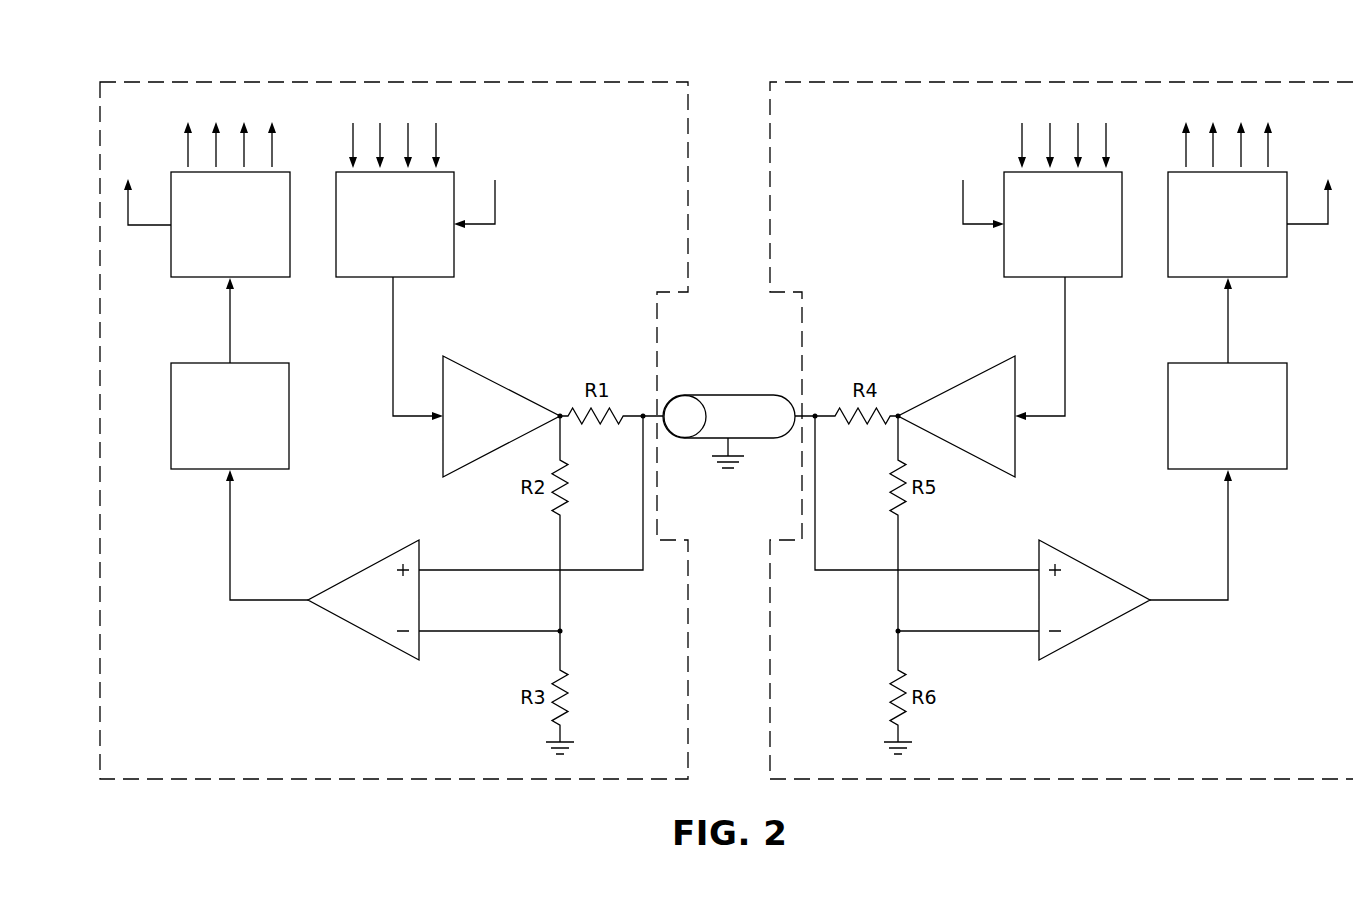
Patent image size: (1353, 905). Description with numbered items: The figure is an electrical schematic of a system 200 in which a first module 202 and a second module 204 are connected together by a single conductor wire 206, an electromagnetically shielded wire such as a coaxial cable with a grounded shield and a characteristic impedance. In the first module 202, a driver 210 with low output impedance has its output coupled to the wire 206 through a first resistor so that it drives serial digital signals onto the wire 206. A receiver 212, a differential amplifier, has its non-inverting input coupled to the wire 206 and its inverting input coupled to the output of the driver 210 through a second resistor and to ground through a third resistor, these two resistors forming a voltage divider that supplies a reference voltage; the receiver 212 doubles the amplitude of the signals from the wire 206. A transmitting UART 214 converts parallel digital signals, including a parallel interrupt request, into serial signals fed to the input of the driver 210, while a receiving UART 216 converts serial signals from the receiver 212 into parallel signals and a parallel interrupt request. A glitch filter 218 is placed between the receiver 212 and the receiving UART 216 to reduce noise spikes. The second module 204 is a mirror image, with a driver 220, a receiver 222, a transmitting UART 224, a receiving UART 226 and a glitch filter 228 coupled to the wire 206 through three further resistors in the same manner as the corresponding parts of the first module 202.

The system 200 is at (730, 100).
The first module 202 is at (396, 82).
The second module 204 is at (1062, 82).
The single conductor wire 206 is at (731, 393).
The driver 210 is at (502, 384).
The receiver 212 is at (360, 568).
The transmitting UART 214 is at (367, 279).
The receiving UART 216 is at (212, 279).
The glitch filter 218 is at (171, 413).
The driver 220 is at (957, 384).
The receiver 222 is at (1098, 568).
The transmitting UART 224 is at (1100, 279).
The receiving UART 226 is at (1262, 279).
The glitch filter 228 is at (1287, 413).